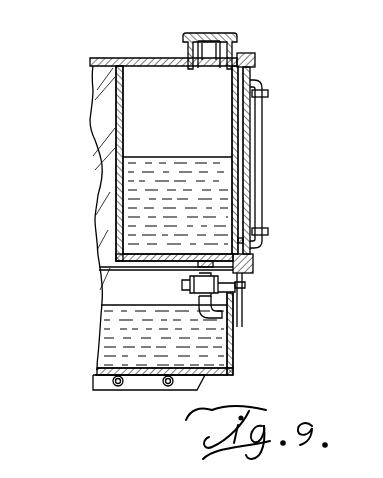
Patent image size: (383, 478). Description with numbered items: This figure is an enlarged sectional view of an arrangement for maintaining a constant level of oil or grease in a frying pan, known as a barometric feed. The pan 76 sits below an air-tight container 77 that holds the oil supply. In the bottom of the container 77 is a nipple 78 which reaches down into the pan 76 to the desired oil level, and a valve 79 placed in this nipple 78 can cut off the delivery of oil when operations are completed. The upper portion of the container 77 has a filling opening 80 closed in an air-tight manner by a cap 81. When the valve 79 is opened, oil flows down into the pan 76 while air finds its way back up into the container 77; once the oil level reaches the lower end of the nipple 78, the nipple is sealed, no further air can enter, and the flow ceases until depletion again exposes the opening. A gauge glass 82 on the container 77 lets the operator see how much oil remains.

The pan 76 is at (213, 346).
The air-tight container 77 is at (118, 123).
The nipple 78 is at (200, 319).
The valve 79 is at (190, 284).
The filling opening 80 is at (211, 53).
The cap 81 is at (223, 34).
The gauge glass 82 is at (260, 178).